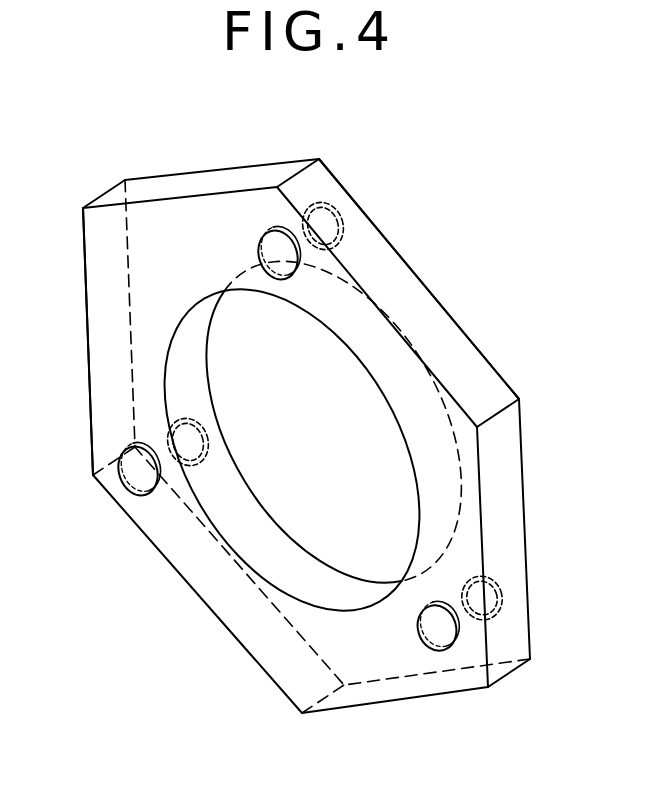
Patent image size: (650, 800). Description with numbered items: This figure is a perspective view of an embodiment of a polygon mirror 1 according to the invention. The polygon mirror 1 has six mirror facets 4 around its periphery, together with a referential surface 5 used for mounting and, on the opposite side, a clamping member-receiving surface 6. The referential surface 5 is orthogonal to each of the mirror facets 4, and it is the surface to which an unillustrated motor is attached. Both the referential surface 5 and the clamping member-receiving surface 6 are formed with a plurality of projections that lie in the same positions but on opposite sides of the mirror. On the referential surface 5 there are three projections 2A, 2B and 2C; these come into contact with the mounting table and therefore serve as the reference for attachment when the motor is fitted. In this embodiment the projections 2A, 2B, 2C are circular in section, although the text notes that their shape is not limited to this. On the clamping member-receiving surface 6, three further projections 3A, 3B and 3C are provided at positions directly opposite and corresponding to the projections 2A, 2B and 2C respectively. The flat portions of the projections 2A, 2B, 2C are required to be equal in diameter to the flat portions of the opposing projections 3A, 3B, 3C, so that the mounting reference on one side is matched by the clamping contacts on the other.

The polygon mirror 1 is at (268, 553).
The projection 2A is at (130, 490).
The projection 2B is at (430, 653).
The projection 2C is at (265, 235).
The projection 3A is at (170, 435).
The projection 3B is at (500, 597).
The projection 3C is at (328, 222).
The mirror facet 4 is at (490, 373).
The referential surface 5 is at (87, 253).
The clamping member-receiving surface 6 is at (467, 523).